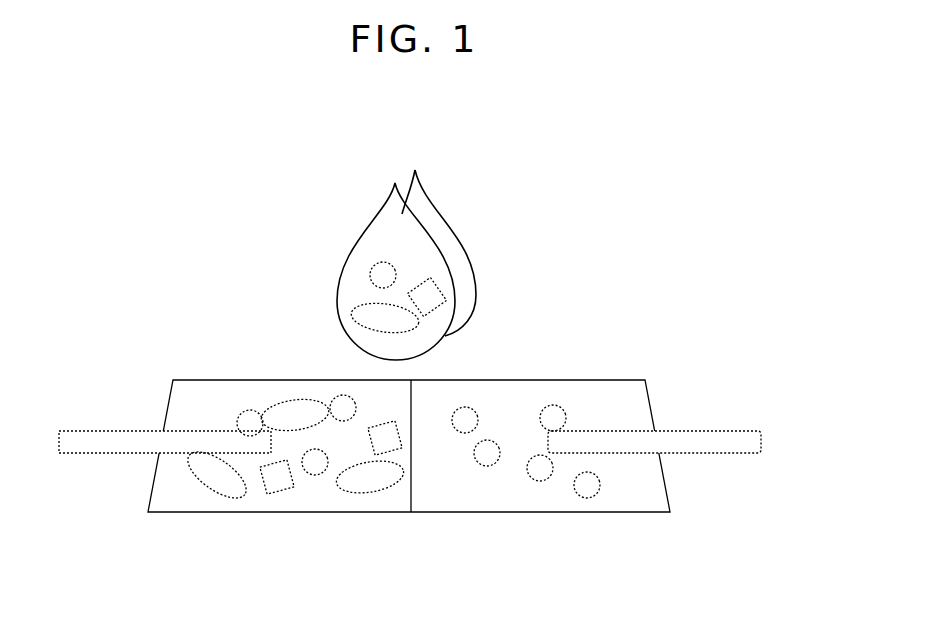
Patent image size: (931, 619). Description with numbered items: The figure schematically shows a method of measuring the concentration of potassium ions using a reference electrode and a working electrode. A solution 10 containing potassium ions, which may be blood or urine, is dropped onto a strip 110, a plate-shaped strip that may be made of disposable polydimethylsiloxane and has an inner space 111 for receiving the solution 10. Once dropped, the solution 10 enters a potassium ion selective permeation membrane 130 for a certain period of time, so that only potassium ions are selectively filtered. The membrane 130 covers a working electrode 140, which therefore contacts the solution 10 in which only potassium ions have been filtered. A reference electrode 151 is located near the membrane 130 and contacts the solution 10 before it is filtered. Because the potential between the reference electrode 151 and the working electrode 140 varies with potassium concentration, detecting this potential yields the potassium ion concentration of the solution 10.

The solution 10 is at (432, 218).
The strip 110 is at (462, 512).
The inner space 111 is at (317, 512).
The potassium ion selective permeation membrane 130 is at (625, 497).
The working electrode 140 is at (703, 438).
The reference electrode 151 is at (118, 438).